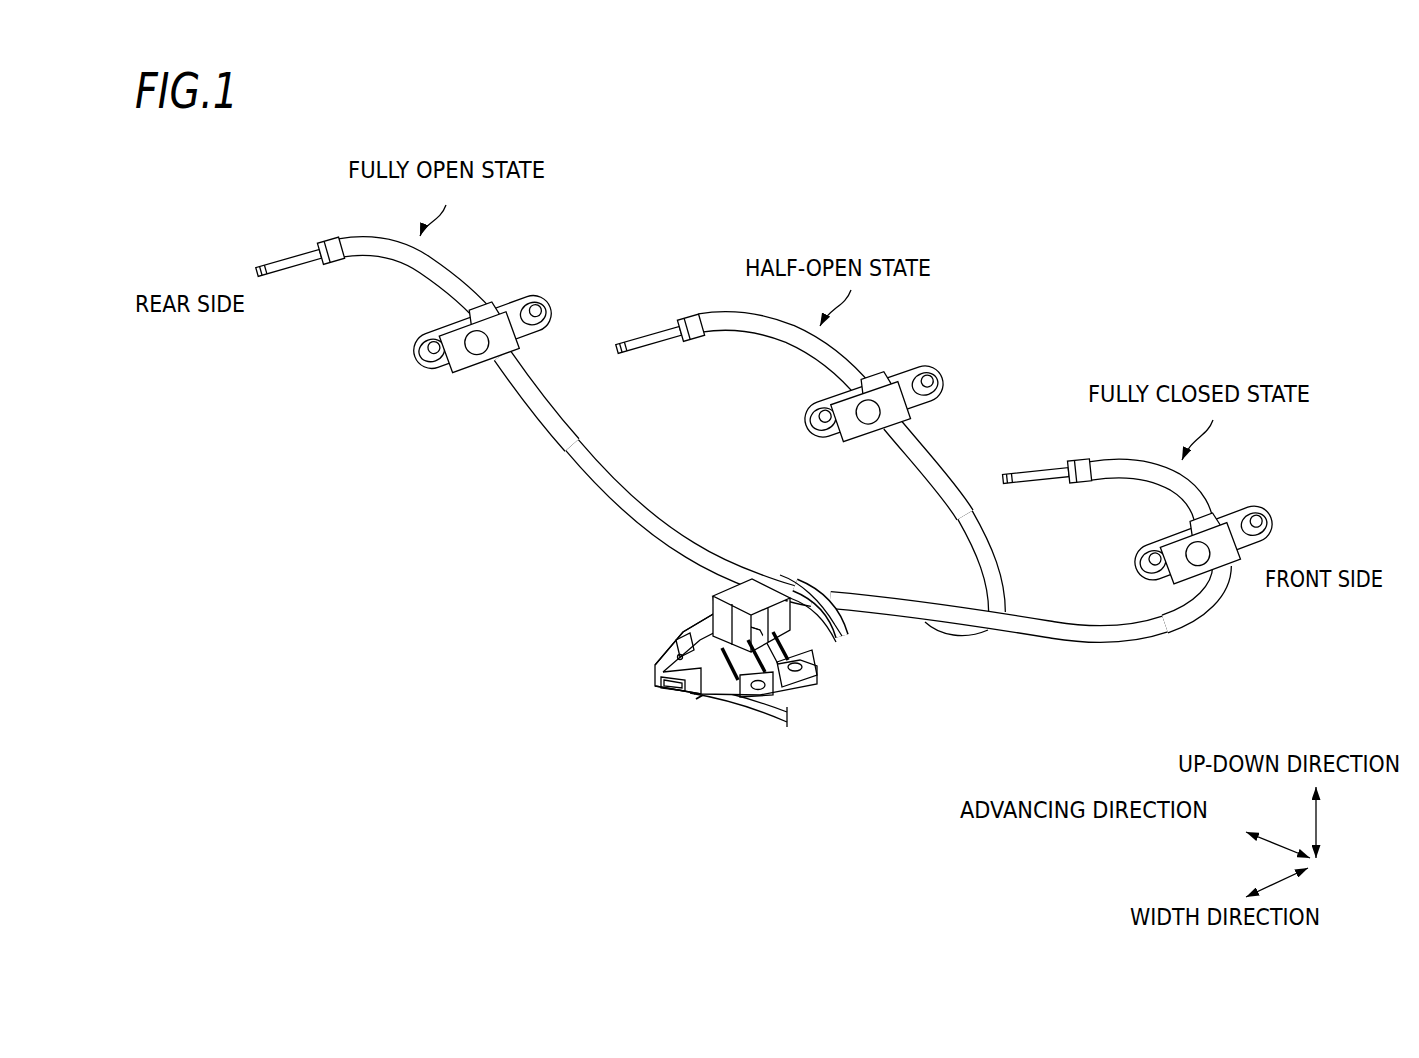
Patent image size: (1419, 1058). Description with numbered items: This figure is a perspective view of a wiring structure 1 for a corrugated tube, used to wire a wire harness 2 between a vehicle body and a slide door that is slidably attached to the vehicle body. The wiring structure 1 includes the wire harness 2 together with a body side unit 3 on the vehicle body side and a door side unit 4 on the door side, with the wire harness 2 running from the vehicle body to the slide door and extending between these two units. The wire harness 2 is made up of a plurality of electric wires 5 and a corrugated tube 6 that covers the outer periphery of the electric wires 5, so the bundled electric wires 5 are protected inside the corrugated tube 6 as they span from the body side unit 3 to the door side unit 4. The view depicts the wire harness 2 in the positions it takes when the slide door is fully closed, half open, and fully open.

The wiring structure 1 is at (1058, 328).
The wire harness 2 is at (612, 508).
The body side unit 3 is at (710, 621).
The door side unit 4 is at (543, 296).
The electric wires 5 is at (293, 262).
The corrugated tube 6 is at (555, 428).